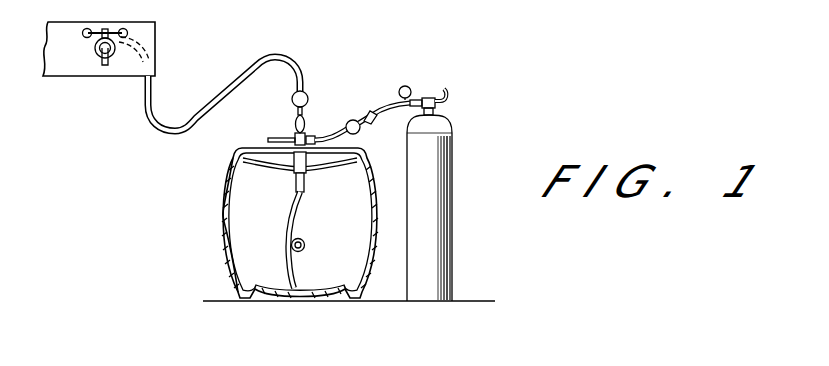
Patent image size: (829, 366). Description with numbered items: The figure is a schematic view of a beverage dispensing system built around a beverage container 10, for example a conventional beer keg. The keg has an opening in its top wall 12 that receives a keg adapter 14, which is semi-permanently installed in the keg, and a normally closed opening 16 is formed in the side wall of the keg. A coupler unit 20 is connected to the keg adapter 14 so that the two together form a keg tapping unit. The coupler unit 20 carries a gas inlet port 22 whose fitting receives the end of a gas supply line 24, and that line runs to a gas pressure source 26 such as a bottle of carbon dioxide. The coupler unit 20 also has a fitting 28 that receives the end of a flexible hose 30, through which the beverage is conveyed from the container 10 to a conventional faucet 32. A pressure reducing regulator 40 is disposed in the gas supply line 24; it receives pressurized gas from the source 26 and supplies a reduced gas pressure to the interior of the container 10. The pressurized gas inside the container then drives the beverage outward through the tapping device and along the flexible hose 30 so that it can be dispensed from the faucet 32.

The beverage container 10 is at (222, 253).
The top wall 12 is at (290, 164).
The keg adapter 14 is at (307, 171).
The normally closed opening 16 is at (305, 245).
The coupler unit 20 is at (295, 138).
The gas inlet port 22 is at (314, 136).
The gas supply line 24 is at (383, 113).
The gas pressure source 26 is at (432, 172).
The fitting 28 is at (294, 119).
The flexible hose 30 is at (168, 135).
The faucet 32 is at (98, 67).
The pressure reducing regulator 40 is at (363, 105).